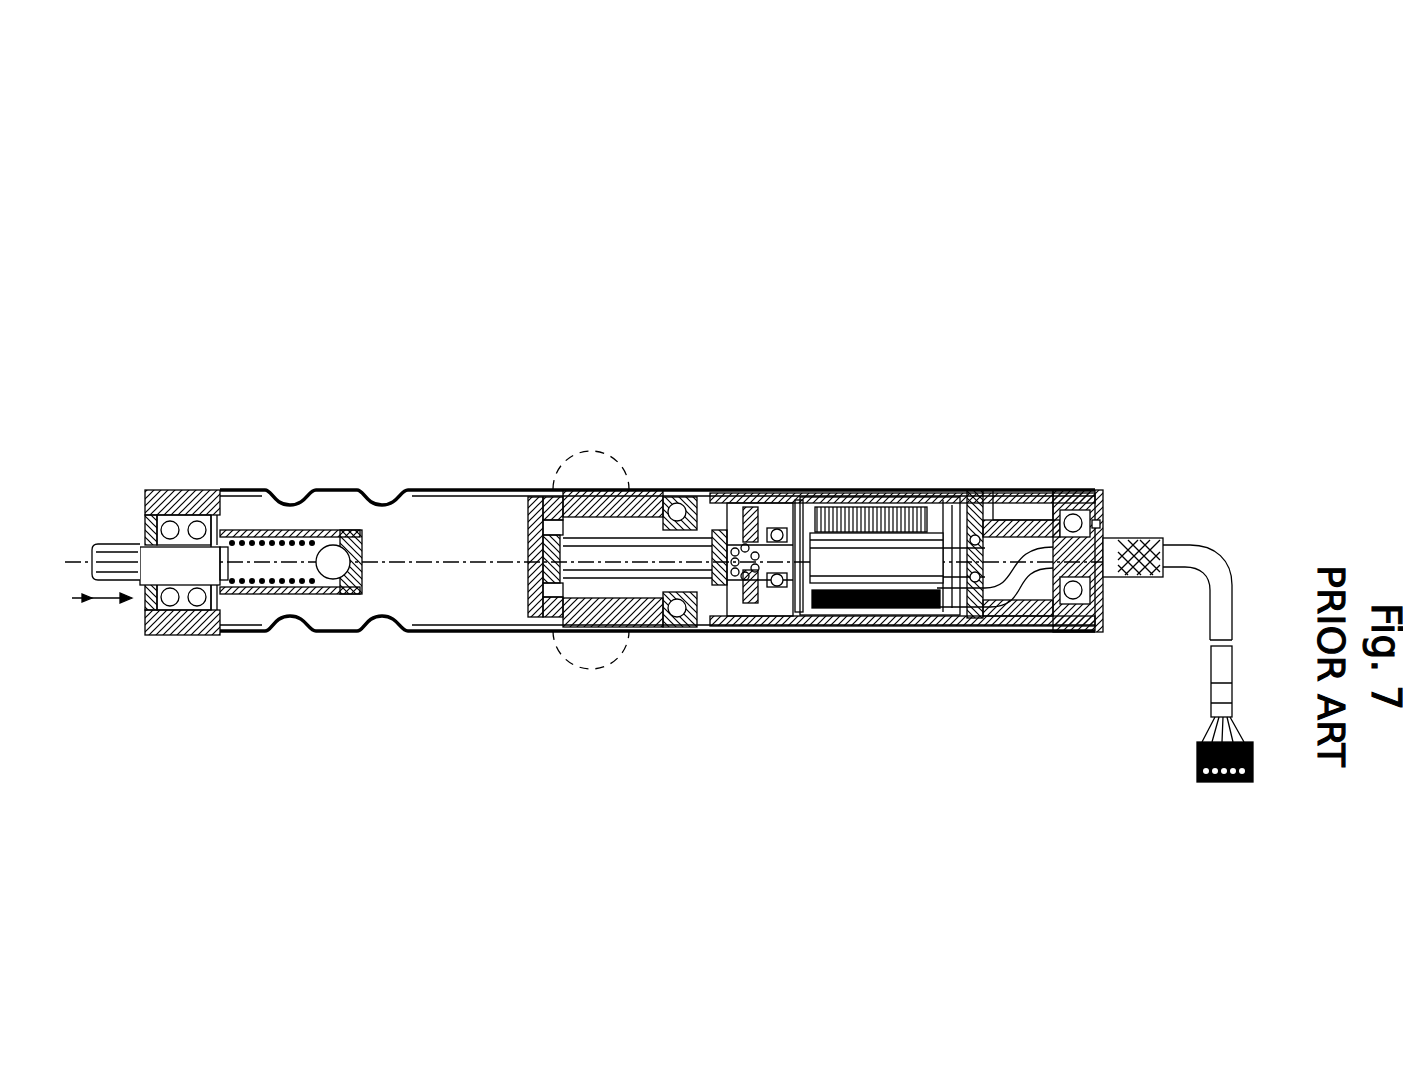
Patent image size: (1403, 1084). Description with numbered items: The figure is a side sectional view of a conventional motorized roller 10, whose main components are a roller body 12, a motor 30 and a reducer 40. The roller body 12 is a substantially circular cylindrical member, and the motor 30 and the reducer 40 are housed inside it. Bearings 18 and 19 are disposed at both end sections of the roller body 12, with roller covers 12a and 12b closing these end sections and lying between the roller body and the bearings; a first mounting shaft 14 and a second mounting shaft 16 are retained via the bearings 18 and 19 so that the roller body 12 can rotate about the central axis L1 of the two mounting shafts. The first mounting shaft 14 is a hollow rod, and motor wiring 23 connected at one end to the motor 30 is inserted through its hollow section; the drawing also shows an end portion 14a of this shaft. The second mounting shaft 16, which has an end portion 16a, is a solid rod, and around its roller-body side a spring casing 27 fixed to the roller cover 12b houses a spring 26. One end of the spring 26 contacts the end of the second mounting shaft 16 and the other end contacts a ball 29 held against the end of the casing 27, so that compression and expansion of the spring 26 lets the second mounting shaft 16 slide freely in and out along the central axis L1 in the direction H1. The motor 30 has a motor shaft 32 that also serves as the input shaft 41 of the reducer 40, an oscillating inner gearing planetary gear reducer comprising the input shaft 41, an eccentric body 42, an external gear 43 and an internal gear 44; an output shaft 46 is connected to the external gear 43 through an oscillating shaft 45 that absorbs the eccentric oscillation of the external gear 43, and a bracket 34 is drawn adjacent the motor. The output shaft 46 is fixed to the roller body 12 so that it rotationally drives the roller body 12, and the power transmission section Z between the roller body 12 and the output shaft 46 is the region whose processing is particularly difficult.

The motorized roller 10 is at (622, 310).
The roller body 12 is at (447, 489).
The roller cover 12a is at (1093, 634).
The roller cover 12b is at (172, 490).
The first mounting shaft 14 is at (1159, 538).
The serrated shaft portion 14a is at (1130, 580).
The second mounting shaft 16 is at (130, 592).
The spline end of input shaft 16a is at (112, 531).
The bearing 18 is at (1065, 630).
The bearing 19 is at (200, 640).
The motor wiring 23 is at (1220, 640).
The spring 26 is at (272, 596).
The spring casing 27 is at (332, 594).
The ball 29 is at (332, 556).
The motor 30 is at (888, 482).
The motor shaft 32 is at (814, 492).
The bracket 34 is at (965, 490).
The reducer 40 is at (777, 480).
The input shaft 41 is at (770, 627).
The eccentric body 42 is at (733, 630).
The external gear 43 is at (757, 630).
The internal gear 44 is at (742, 492).
The oscillating shaft 45 is at (584, 560).
The output shaft 46 is at (546, 618).
The power transmission section Z is at (598, 457).
The direction H1 is at (102, 615).
The central axis L1 is at (1196, 545).